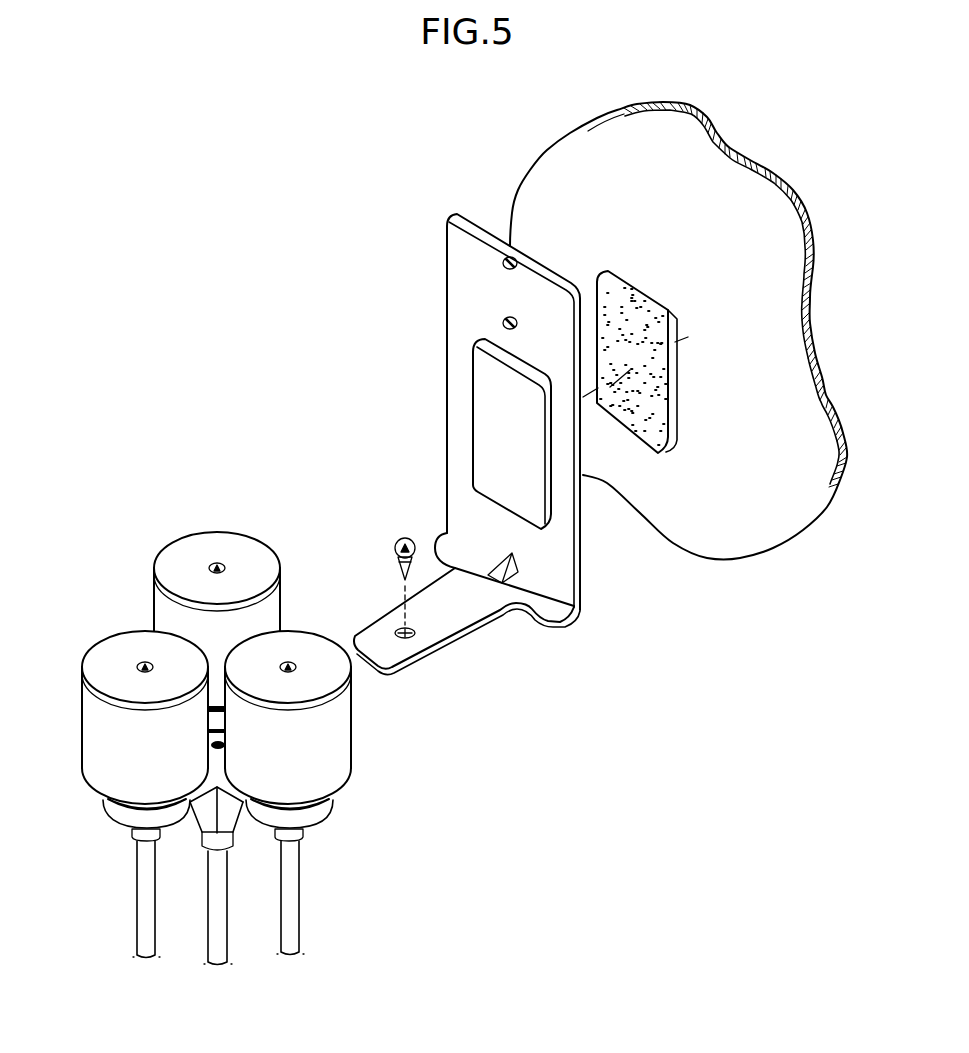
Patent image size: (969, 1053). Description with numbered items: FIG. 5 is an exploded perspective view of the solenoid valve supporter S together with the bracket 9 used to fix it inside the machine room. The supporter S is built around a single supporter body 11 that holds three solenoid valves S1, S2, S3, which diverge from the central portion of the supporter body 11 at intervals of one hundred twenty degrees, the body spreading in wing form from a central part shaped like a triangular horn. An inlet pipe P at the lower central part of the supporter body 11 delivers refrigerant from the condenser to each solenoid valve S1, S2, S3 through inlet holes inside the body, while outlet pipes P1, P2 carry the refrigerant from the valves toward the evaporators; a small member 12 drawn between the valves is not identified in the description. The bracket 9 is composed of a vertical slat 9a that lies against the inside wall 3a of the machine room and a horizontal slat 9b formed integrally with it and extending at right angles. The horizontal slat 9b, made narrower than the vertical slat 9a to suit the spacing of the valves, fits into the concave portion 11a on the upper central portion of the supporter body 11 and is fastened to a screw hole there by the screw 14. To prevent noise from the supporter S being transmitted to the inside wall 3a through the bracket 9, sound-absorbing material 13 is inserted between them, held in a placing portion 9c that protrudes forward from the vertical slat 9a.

The inside wall 3a is at (747, 527).
The sound-absorbing material 13 is at (647, 430).
The bracket 9 is at (479, 459).
The vertical slat 9a is at (462, 280).
The horizontal slat 9b is at (452, 628).
The placing portion 9c is at (480, 427).
The screw 14 is at (398, 561).
The solenoid valve supporter S is at (191, 663).
The solenoid valve S1 is at (97, 657).
The solenoid valve S2 is at (243, 657).
The solenoid valve S3 is at (167, 560).
The connecting member 12 is at (220, 740).
The supporter body 11 is at (233, 817).
The concave portion 11a is at (217, 777).
The inlet pipe P is at (225, 912).
The outlet pipe P1 is at (143, 887).
The outlet pipe P2 is at (293, 893).